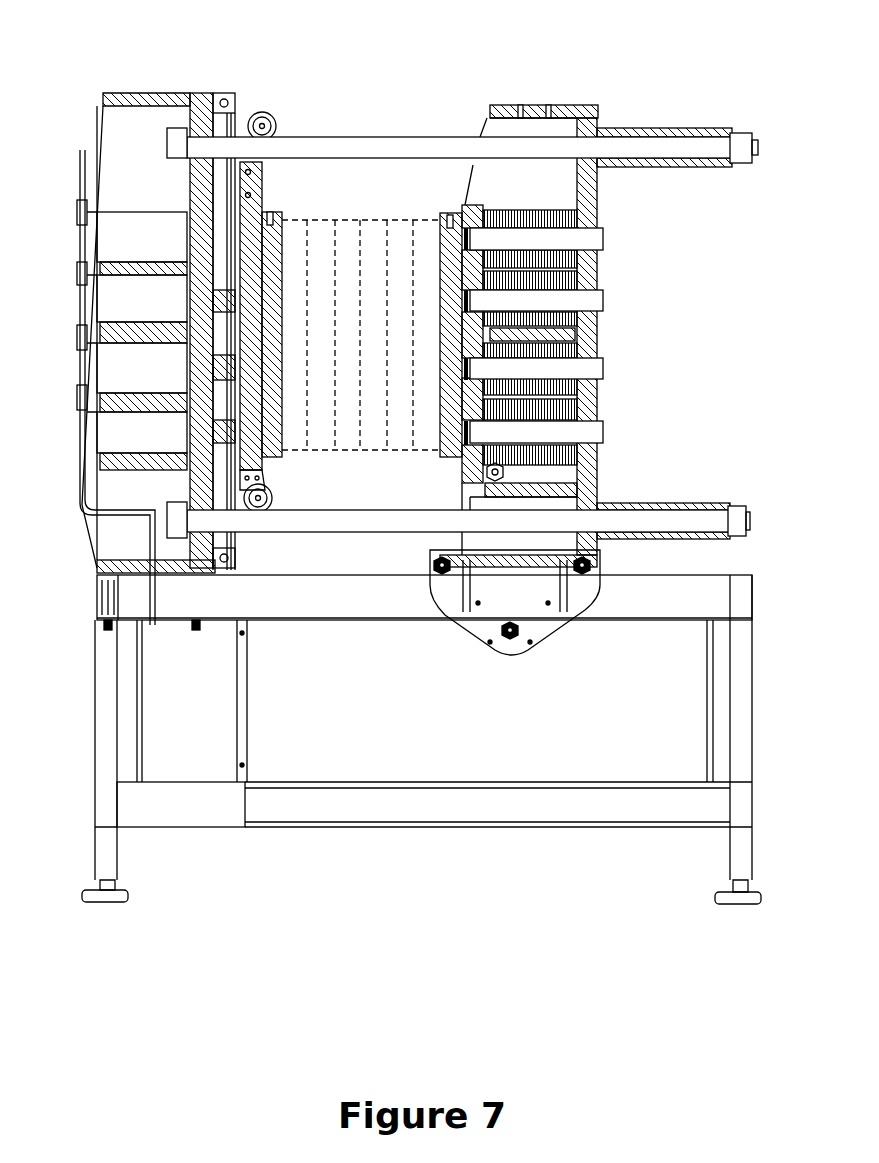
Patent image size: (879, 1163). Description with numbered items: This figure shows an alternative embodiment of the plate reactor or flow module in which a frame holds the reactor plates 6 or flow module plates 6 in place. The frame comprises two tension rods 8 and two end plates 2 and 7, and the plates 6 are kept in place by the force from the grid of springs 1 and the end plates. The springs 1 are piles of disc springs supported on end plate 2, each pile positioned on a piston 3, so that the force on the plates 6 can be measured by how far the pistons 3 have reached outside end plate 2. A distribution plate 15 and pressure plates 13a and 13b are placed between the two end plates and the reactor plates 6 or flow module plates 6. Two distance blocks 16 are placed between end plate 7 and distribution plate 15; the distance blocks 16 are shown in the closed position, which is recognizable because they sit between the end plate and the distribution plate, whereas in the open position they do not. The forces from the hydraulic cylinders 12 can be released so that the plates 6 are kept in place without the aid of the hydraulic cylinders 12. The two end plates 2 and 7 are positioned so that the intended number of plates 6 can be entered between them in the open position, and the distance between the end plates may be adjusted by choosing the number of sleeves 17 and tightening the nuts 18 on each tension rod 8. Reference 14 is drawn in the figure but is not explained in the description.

The springs 1 is at (557, 262).
The end plate 2 is at (593, 187).
The piston 3 is at (572, 435).
The reactor plates or flow module plates 6 is at (338, 384).
The end plate 7 is at (202, 112).
The tension rods 8 is at (573, 525).
The hydraulic cylinders 12 is at (147, 243).
The pressure plate 13a is at (276, 240).
The pressure plate 13b is at (448, 272).
The press housing 14 is at (483, 208).
The distribution plate 15 is at (256, 190).
The distance blocks 16 is at (215, 490).
The sleeves 17 is at (660, 505).
The nuts 18 is at (737, 520).